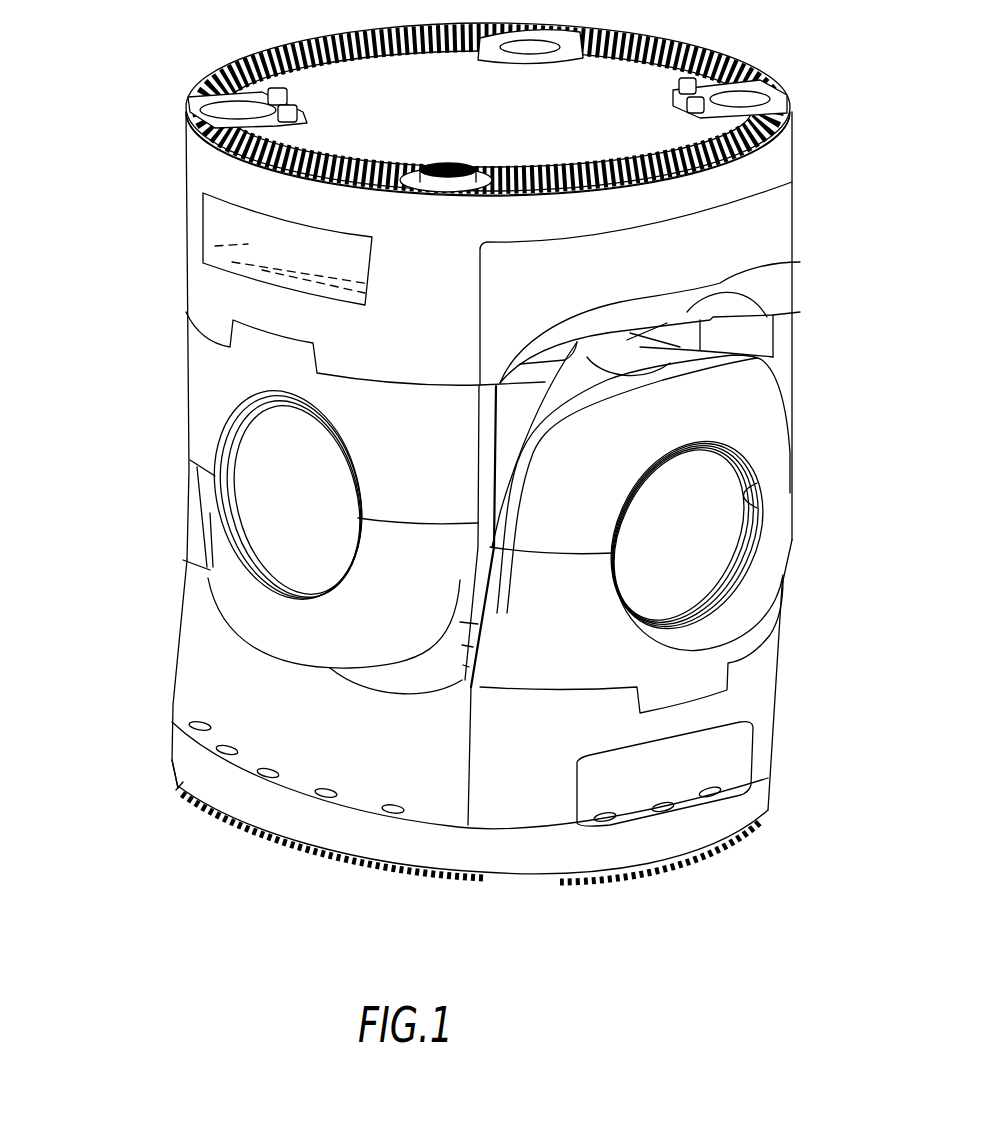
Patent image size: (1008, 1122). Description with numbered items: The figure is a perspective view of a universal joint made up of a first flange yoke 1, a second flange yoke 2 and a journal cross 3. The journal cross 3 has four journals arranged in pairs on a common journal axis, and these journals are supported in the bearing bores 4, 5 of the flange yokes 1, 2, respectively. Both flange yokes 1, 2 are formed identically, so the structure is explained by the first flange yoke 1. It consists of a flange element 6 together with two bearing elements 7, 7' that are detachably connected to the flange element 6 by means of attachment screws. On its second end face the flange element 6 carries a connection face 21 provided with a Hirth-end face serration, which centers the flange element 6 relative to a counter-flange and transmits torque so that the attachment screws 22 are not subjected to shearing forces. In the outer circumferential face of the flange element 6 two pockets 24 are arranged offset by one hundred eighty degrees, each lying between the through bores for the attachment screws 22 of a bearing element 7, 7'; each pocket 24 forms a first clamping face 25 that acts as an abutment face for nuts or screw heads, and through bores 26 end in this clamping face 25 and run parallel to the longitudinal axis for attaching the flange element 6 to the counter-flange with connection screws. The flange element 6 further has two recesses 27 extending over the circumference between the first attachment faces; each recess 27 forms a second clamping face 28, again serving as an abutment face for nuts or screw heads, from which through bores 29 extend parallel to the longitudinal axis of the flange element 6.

The first flange yoke 1 is at (152, 683).
The second flange yoke 2 is at (150, 252).
The journal cross 3 is at (792, 262).
The bearing bore 4 is at (757, 506).
The bearing bore 5 is at (217, 473).
The flange element 6 is at (193, 630).
The bearing element 7 is at (662, 582).
The bearing element 7' is at (308, 536).
The connection face 21 is at (365, 858).
The attachment screw 22 is at (447, 160).
The pocket 24 is at (750, 742).
The first clamping face 25 is at (712, 800).
The through bore 26 is at (622, 815).
The recess 27 is at (458, 775).
The second clamping face 28 is at (305, 784).
The through bore 29 is at (187, 777).